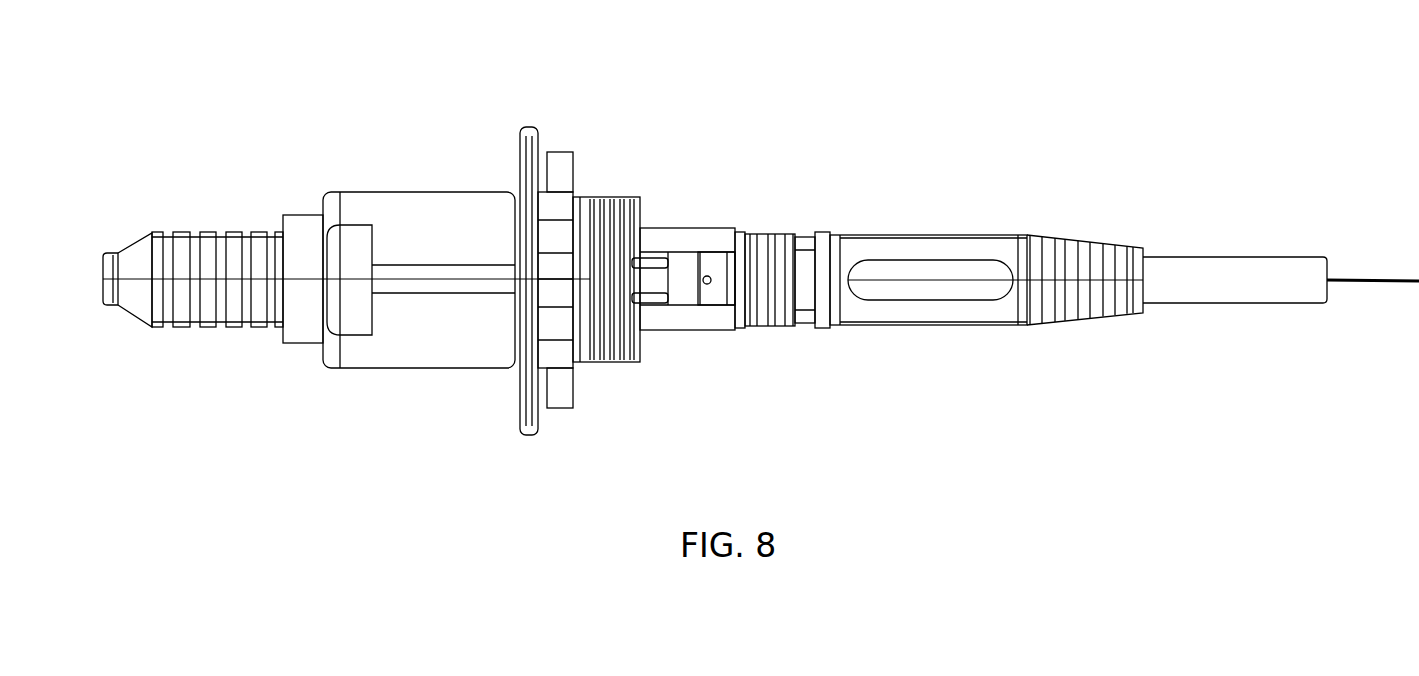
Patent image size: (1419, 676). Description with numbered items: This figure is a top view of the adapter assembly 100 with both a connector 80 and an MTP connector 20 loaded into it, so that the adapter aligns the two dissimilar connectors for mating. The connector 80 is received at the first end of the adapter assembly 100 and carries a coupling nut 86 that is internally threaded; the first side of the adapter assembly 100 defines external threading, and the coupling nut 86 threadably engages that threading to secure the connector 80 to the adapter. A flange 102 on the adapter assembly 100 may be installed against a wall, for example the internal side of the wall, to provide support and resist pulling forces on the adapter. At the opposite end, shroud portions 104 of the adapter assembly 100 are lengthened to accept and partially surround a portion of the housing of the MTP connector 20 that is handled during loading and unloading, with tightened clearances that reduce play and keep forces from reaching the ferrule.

The connector 80 is at (290, 133).
The coupling nut 86 is at (367, 207).
The flange 102 is at (526, 138).
The adapter assembly 100 is at (545, 148).
The shroud portions 104 is at (660, 240).
The MTP connector 20 is at (935, 183).